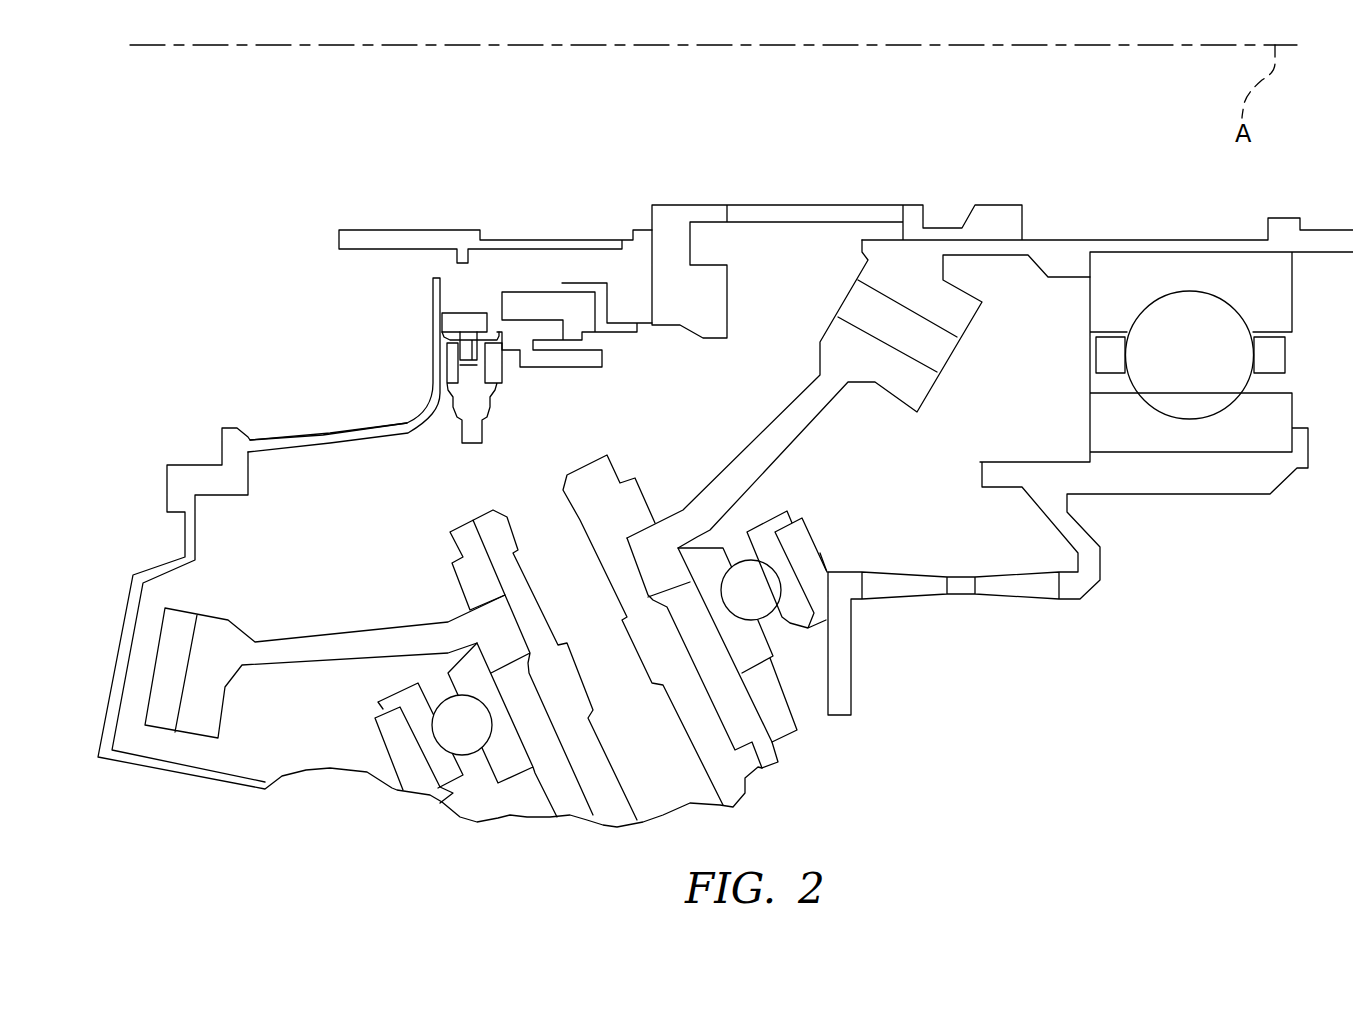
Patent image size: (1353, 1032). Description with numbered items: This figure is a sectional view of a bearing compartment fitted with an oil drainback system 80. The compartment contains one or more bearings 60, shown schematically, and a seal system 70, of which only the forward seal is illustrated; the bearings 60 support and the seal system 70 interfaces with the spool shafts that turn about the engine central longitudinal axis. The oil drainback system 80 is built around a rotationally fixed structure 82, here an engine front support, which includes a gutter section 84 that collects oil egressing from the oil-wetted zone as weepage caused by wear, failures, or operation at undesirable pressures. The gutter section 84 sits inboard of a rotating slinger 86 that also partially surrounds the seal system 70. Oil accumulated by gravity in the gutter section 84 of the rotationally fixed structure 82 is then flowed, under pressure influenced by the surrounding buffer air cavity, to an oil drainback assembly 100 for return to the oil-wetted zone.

The bearings 60 is at (1222, 520).
The seal system 70 is at (538, 303).
The oil drainback system 80 is at (392, 333).
The rotationally fixed structure 82 is at (315, 435).
The gutter section 84 is at (478, 300).
The rotating slinger 86 is at (440, 248).
The oil drainback assembly 100 is at (497, 408).